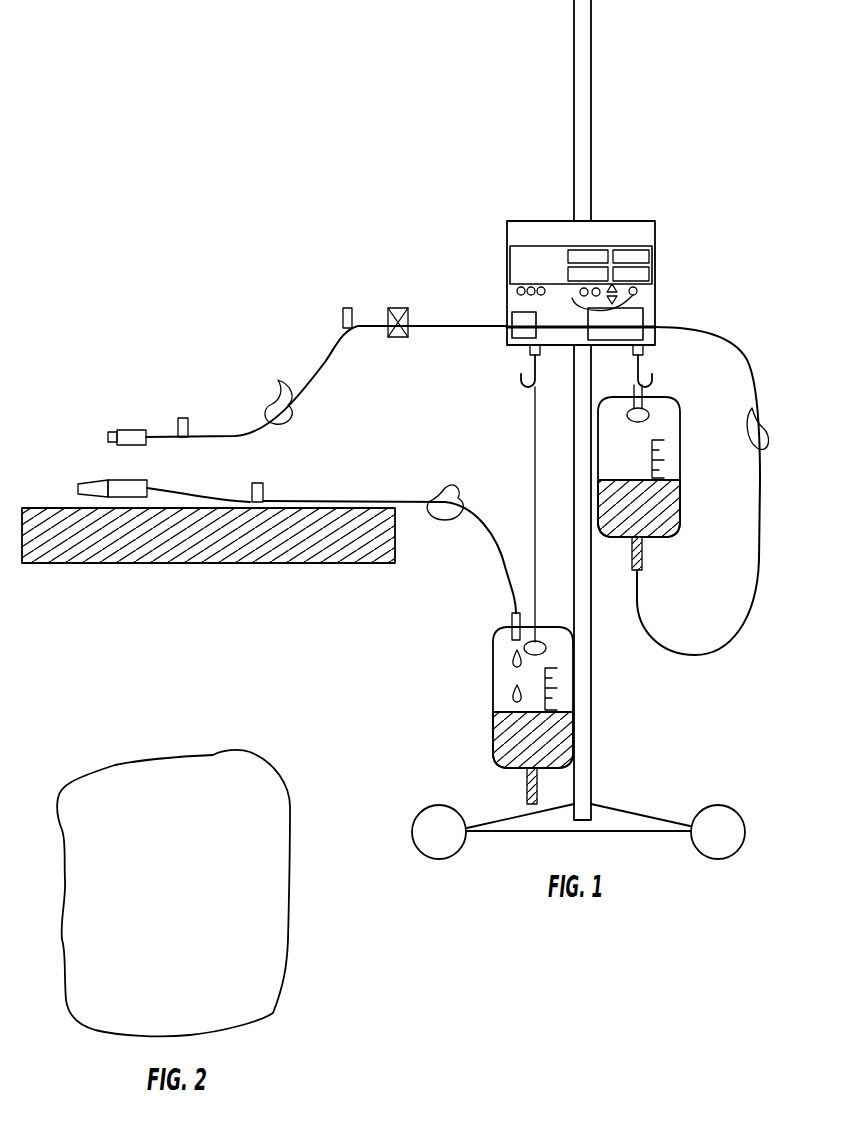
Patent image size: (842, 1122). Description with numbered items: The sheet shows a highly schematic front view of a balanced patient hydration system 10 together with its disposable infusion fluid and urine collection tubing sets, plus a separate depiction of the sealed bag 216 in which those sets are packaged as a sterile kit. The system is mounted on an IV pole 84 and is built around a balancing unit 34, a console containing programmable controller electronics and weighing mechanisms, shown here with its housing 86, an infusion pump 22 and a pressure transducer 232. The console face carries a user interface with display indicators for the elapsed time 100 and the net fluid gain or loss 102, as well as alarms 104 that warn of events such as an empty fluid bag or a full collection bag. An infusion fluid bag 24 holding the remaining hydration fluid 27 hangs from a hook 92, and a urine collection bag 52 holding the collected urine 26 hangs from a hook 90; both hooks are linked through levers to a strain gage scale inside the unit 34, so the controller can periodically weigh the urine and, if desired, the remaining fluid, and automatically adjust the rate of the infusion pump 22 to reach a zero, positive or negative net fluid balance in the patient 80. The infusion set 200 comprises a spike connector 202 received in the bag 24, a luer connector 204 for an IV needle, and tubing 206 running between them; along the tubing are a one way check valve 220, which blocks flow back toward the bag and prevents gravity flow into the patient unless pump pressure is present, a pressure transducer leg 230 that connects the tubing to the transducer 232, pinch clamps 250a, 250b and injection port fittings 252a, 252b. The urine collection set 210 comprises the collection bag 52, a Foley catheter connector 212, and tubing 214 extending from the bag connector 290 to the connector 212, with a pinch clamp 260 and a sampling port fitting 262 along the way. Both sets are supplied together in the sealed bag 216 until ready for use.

In FIG. 1, the fluid management system 10 is at (632, 103).
In FIG. 1, the infusion pump 22 is at (646, 318).
In FIG. 1, the infusion fluid bag 24 is at (680, 460).
In FIG. 1, the collected urine 26 is at (565, 748).
In FIG. 1, the remaining hydration fluid 27 is at (680, 520).
In FIG. 1, the balancing unit 34 is at (606, 222).
In FIG. 1, the urine collection bag 52 is at (492, 700).
In FIG. 1, the patient 80 is at (230, 565).
In FIG. 1, the IV pole 84 is at (592, 690).
In FIG. 1, the pump housing 86 is at (508, 313).
In FIG. 1, the hook 90 is at (525, 385).
In FIG. 1, the hook 92 is at (645, 375).
In FIG. 1, the elapsed time display indicator 100 is at (648, 273).
In FIG. 1, the net fluid gain or loss display indicator 102 is at (648, 259).
In FIG. 1, the alarms 104 is at (505, 300).
In FIG. 1, the infusion set 200 is at (428, 352).
In FIG. 1, the infusion bag spike connector 202 is at (642, 555).
In FIG. 1, the luer connector 204 is at (135, 430).
In FIG. 1, the tubing 206 is at (224, 436).
In FIG. 1, the urine collection set 210 is at (430, 575).
In FIG. 1, the Foley catheter connector 212 is at (125, 480).
In FIG. 1, the tubing 214 is at (470, 535).
In FIG. 2, the sealed bag 216 is at (275, 842).
In FIG. 1, the one way check valve 220 is at (393, 310).
In FIG. 1, the pressure transducer leg 230 is at (572, 298).
In FIG. 1, the pressure transducer 232 is at (645, 268).
In FIG. 1, the pinch clamp 250a is at (276, 424).
In FIG. 1, the pinch clamp 250b is at (764, 436).
In FIG. 1, the injection port fitting 252a is at (183, 418).
In FIG. 1, the injection port fitting 252b is at (345, 310).
In FIG. 1, the pinch clamp 260 is at (442, 488).
In FIG. 1, the sampling port fitting 262 is at (257, 483).
In FIG. 1, the urine collection bag connector 290 is at (512, 620).